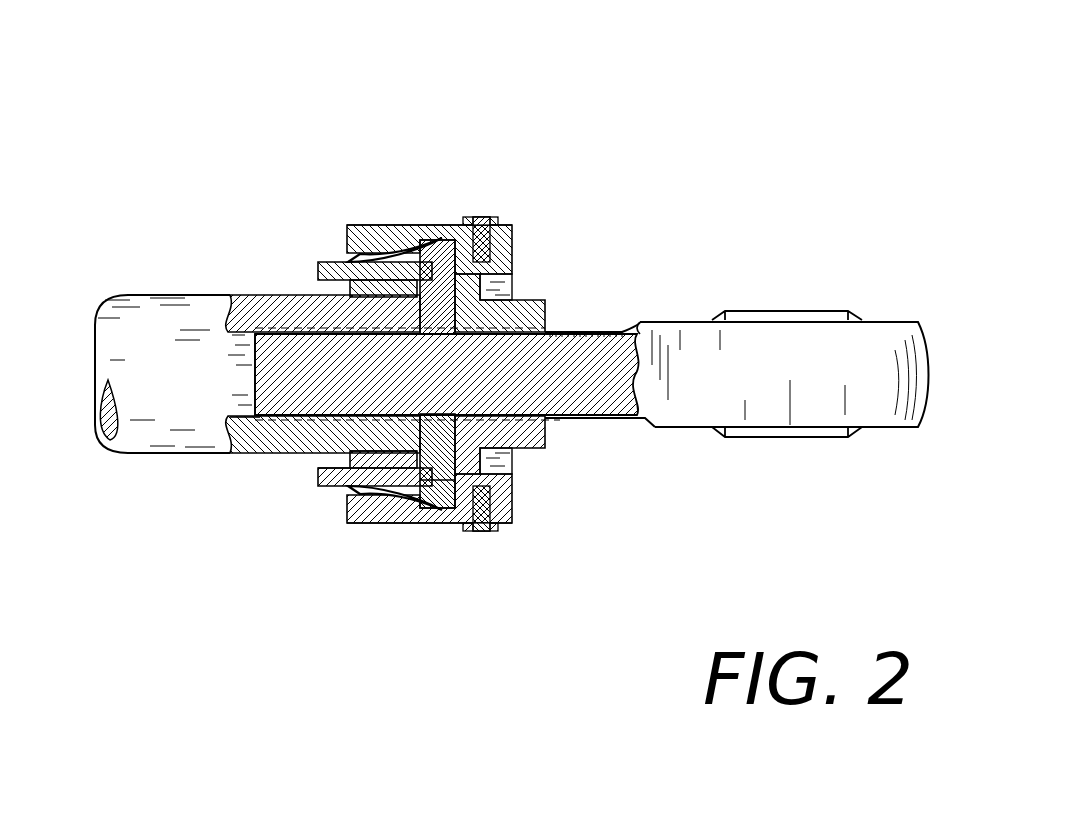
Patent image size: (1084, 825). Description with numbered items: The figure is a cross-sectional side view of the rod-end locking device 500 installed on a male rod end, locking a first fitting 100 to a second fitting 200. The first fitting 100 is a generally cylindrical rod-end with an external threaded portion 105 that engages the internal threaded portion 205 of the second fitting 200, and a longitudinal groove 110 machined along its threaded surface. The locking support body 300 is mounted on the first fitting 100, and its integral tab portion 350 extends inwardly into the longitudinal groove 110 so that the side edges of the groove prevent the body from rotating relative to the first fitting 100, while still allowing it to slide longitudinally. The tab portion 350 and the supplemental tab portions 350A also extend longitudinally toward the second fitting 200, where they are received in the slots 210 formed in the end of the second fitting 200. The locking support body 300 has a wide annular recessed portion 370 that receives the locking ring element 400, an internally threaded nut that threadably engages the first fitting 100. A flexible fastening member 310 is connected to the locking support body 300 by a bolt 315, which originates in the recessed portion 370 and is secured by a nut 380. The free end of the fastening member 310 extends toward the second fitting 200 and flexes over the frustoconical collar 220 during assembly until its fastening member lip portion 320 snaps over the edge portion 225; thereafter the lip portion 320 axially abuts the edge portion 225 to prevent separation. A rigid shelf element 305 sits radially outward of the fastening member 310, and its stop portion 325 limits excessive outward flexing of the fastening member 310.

The first fitting 100 is at (876, 335).
The external threaded portion 105 is at (590, 420).
The longitudinal groove 110 is at (622, 322).
The second fitting 200 is at (120, 330).
The internal threaded portion 205 is at (285, 430).
The slots 210 is at (385, 458).
The collar 220 is at (350, 458).
The edge portion 225 is at (228, 293).
The locking support body 300 is at (515, 257).
The shelf element 305 is at (397, 235).
The fastening member 310 is at (343, 273).
The bolt 315 is at (473, 217).
The fastening member lip portion 320 is at (323, 288).
The stop portion 325 is at (352, 240).
The tab portion 350 is at (440, 340).
The supplemental tab portions 350A is at (432, 445).
The recessed portion 370 is at (515, 282).
The nut 380 is at (490, 217).
The locking ring element 400 is at (545, 305).
The rod-end locking device 500 is at (551, 531).